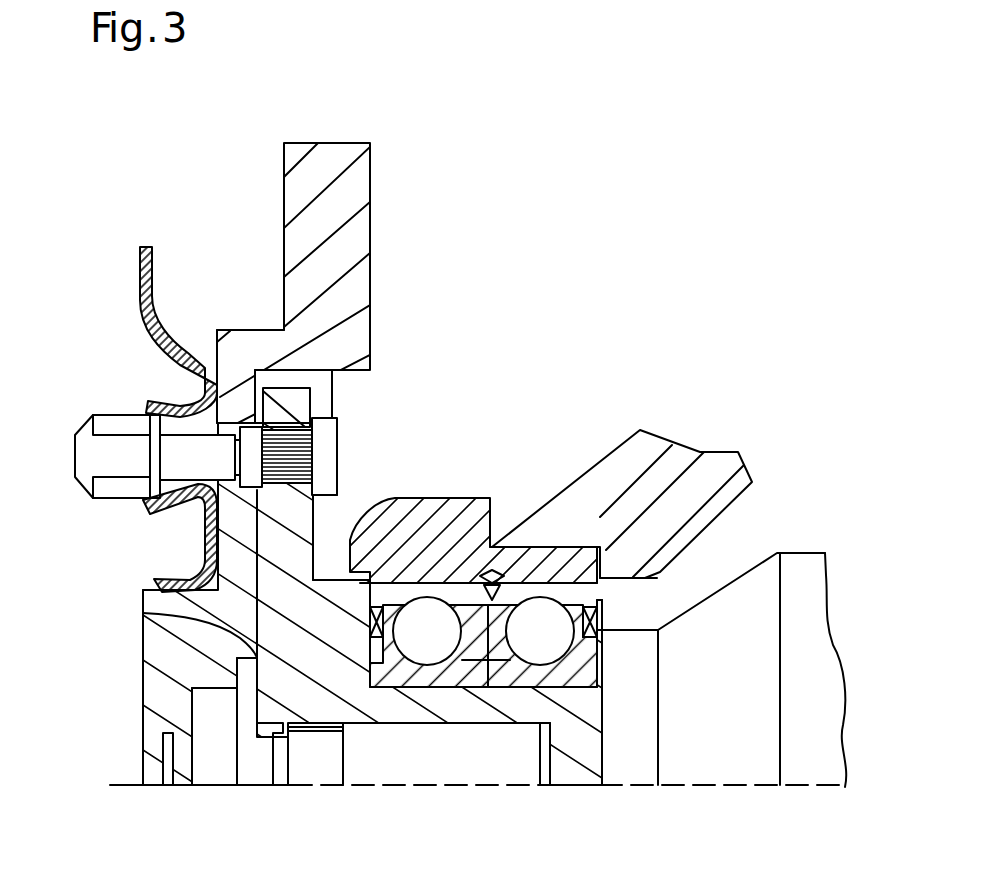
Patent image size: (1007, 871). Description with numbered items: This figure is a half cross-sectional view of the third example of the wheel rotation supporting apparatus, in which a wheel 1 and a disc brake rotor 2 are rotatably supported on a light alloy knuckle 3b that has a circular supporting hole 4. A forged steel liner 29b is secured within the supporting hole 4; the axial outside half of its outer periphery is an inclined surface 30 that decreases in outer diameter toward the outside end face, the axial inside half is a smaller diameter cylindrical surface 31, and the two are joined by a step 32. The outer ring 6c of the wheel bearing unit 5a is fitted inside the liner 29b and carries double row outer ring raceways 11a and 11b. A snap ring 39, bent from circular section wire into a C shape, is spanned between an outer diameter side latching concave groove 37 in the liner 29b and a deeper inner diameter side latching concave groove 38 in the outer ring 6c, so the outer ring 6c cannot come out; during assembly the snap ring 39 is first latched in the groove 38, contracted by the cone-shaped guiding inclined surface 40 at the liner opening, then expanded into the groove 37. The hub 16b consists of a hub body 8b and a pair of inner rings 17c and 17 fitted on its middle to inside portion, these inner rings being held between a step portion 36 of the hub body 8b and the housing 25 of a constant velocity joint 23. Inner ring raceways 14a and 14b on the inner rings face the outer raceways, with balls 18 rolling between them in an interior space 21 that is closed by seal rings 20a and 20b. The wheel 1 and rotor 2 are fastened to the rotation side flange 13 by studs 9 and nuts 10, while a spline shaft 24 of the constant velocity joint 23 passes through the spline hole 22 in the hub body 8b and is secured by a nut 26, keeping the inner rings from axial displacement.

The wheel 1 is at (152, 270).
The rotor 2 is at (360, 181).
The knuckle 3b is at (717, 449).
The supporting hole 4 is at (562, 547).
The wheel bearing unit 5a is at (100, 547).
The outer ring 6c is at (445, 575).
The hub body 8b is at (263, 632).
The stud 9 is at (313, 417).
The nut 10 is at (112, 457).
The outer ring raceway 11a is at (403, 545).
The outer ring raceway 11b is at (540, 560).
The rotation side flange 13 is at (272, 408).
The inner ring raceway 14a is at (428, 662).
The inner ring raceway 14b is at (543, 650).
The hub 16b is at (140, 606).
The inner ring 17 is at (590, 667).
The inner ring 17c is at (372, 655).
The ball 18 is at (413, 640).
The seal ring 20a is at (204, 557).
The seal ring 20b is at (597, 618).
The interior space 21 is at (468, 648).
The spline hole 22 is at (350, 742).
The constant velocity joint 23 is at (827, 742).
The spline shaft 24 is at (303, 770).
The housing 25 is at (748, 588).
The nut 26 is at (210, 768).
The liner 29b is at (473, 578).
The inclined surface 30 is at (357, 540).
The cylindrical surface 31 is at (592, 520).
The step 32 is at (492, 572).
The step portion 36 is at (368, 725).
The outer diameter side latching concave groove 37 is at (500, 580).
The inner diameter side latching concave groove 38 is at (493, 657).
The snap ring 39 is at (478, 575).
The guiding inclined surface 40 is at (207, 527).